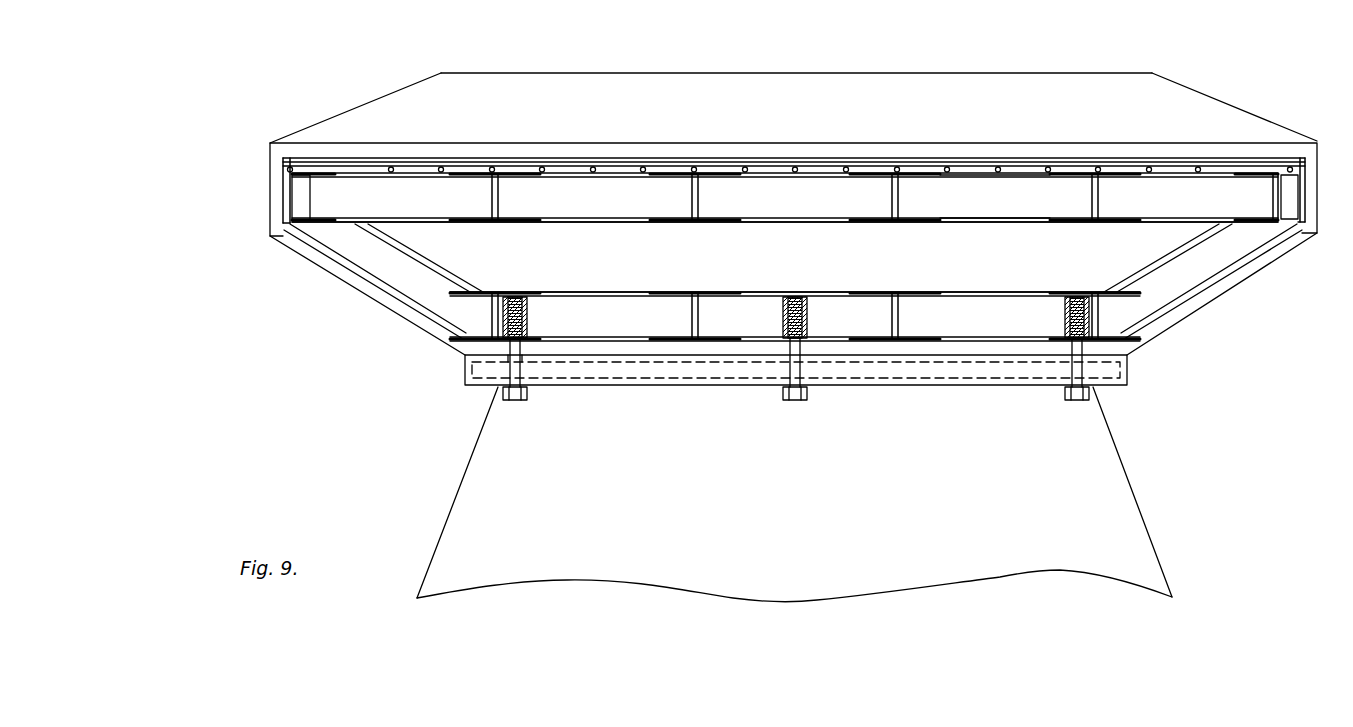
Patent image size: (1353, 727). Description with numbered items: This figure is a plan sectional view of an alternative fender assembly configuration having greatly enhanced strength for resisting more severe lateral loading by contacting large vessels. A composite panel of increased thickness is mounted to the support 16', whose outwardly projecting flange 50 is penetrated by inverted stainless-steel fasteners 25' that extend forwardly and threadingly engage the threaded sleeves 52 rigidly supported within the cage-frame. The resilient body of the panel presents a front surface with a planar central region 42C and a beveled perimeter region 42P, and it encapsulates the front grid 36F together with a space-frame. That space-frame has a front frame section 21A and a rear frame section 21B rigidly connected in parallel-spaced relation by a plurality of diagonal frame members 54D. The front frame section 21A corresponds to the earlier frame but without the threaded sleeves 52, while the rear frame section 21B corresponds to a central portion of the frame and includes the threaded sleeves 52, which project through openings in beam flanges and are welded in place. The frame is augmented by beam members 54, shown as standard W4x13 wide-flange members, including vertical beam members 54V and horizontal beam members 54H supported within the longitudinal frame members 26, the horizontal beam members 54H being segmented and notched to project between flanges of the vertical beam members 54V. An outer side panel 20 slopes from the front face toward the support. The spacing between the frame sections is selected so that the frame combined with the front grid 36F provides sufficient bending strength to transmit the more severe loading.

The roof panel sloped portion 42P is at (372, 102).
The planar central region 42C is at (892, 73).
The front grid 36F is at (597, 160).
The horizontal beam members 54H is at (400, 207).
The beam members 54 is at (1177, 168).
The vertical beam members 54V is at (892, 199).
The W4×13 members W4x13 is at (1035, 210).
The front frame section 21A is at (1033, 223).
The rear frame section 21B is at (1035, 289).
The longitudinal frame members 26 is at (1282, 223).
The resilient body 20 is at (1178, 323).
The diagonal frame members 54D is at (790, 258).
The threaded sleeves 52 is at (528, 319).
The fasteners 25' is at (796, 391).
The outwardly projecting flange 50 is at (465, 387).
The support 16' is at (787, 494).